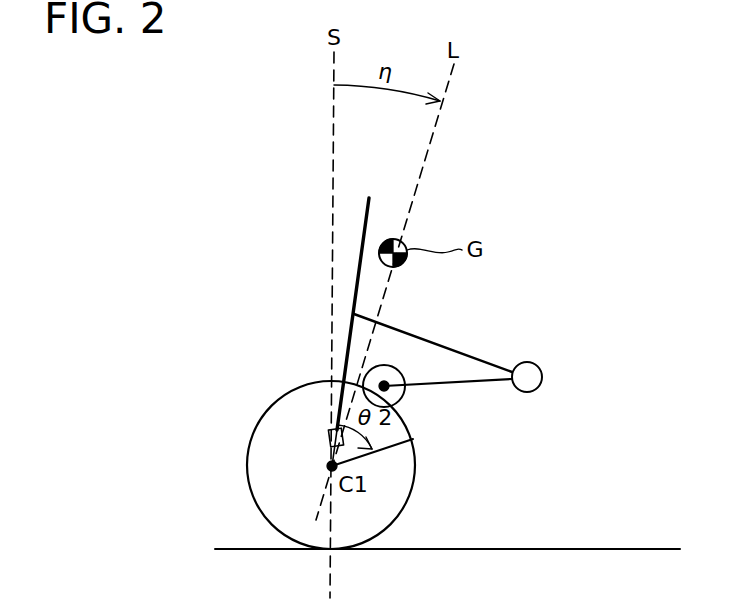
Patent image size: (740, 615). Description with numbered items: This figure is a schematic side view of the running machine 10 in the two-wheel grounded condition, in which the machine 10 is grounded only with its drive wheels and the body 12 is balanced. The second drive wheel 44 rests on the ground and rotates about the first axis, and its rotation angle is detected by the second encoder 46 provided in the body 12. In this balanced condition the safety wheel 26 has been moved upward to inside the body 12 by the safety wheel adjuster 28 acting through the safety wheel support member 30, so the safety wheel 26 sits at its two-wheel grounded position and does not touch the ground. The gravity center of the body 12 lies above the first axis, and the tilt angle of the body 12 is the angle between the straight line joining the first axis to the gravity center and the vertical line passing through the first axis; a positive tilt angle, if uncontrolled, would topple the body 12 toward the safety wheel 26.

The machine 10 is at (542, 124).
The body 12 is at (355, 283).
The safety wheel 26 is at (406, 397).
The safety wheel adjuster 28 is at (542, 376).
The safety wheel support member 30 is at (492, 382).
The second drive wheel 44 is at (278, 400).
The second encoder 46 is at (328, 438).